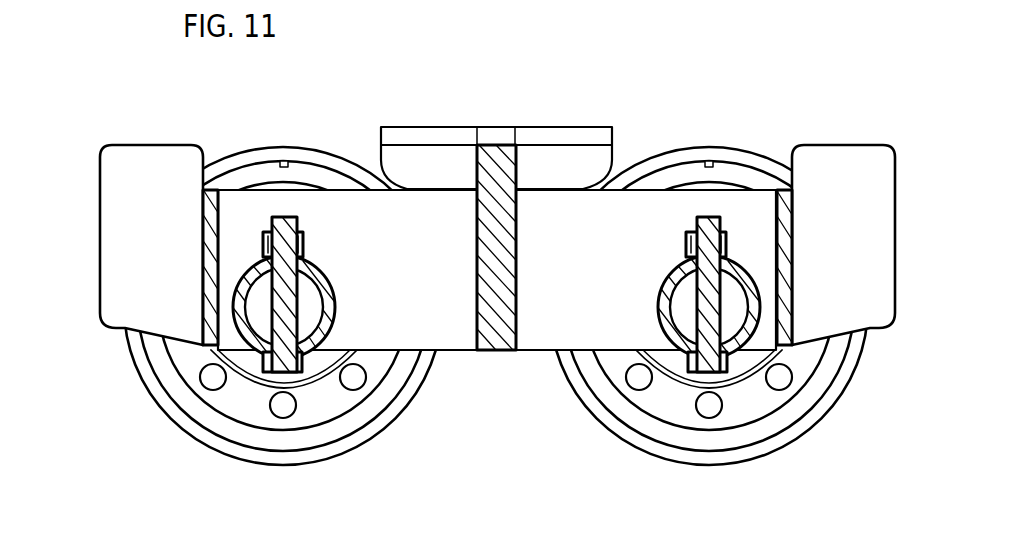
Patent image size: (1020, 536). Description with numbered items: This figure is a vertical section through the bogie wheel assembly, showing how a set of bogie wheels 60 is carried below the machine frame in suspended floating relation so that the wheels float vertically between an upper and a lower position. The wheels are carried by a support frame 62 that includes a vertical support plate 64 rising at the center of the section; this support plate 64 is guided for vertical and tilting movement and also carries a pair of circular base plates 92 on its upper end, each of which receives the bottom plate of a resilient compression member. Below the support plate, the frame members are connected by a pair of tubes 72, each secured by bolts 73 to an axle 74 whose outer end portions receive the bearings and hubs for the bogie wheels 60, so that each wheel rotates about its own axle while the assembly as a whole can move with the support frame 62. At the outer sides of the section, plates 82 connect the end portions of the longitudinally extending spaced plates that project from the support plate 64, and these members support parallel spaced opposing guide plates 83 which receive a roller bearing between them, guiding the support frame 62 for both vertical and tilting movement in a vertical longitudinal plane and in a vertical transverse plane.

The bogie wheels 60 is at (722, 478).
The support frame 62 is at (558, 114).
The vertical support plate 64 is at (498, 350).
The tubes 72 is at (664, 284).
The bolts 73 is at (698, 335).
The axles 74 is at (745, 330).
The plates 82 is at (895, 355).
The guide plates 83 is at (910, 253).
The circular base plates 92 is at (437, 127).